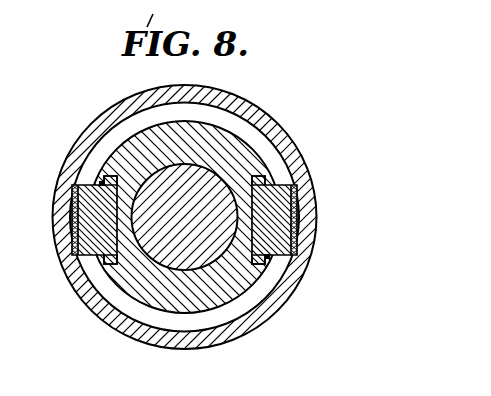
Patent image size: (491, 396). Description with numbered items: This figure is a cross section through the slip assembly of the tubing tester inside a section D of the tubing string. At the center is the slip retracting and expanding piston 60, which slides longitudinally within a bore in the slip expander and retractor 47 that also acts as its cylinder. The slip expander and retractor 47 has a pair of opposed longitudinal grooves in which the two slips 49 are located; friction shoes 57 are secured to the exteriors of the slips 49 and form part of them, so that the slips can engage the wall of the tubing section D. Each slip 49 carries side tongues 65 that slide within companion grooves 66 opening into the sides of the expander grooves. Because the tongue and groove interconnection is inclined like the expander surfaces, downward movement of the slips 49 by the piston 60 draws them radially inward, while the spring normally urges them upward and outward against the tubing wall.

The tubing string section D is at (131, 100).
The slip expander and retractor 47 is at (182, 303).
The slips 49 is at (74, 256).
The friction shoes 57 is at (73, 207).
The slip retracting and expanding piston 60 is at (212, 177).
The side tongues 65 is at (279, 133).
The grooves 66 is at (103, 185).